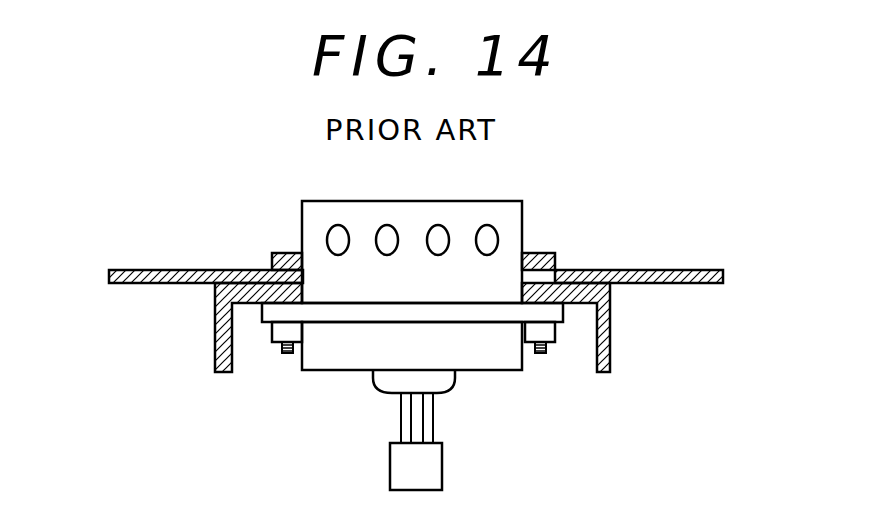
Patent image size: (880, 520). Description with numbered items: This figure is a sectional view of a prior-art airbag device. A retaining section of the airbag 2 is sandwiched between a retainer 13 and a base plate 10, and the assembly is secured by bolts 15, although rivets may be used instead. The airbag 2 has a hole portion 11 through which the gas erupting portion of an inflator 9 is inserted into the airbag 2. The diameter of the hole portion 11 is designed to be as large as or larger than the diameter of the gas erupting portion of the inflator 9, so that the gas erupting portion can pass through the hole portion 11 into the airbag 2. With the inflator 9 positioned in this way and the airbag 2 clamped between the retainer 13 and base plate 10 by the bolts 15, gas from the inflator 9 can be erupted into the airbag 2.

The airbag 2 is at (253, 270).
The inflator 9 is at (516, 226).
The base plate 10 is at (612, 345).
The hole portion 11 is at (294, 242).
The retainer 13 is at (552, 255).
The bolts 15 is at (547, 353).